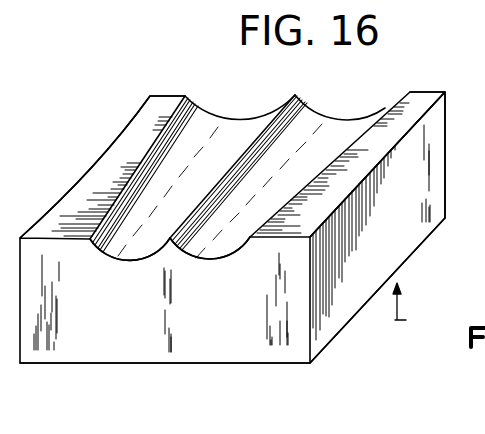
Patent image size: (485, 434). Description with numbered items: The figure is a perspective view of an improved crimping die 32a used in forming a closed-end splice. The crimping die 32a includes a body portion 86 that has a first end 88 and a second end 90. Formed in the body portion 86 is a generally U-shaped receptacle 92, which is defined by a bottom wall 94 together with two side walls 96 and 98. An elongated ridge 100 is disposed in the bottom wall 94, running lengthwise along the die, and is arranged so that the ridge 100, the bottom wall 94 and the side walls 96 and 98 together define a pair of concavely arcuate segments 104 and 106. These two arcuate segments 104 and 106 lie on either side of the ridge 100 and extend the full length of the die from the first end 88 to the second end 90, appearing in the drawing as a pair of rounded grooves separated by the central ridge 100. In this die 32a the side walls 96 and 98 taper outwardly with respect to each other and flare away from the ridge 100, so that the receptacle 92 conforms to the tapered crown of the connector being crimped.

The body portion 86 is at (102, 168).
The first end 88 is at (147, 352).
The second end 90 is at (424, 97).
The U-shaped receptacle 92 is at (218, 138).
The bottom wall 94 is at (195, 180).
The side wall 96 is at (167, 118).
The side wall 98 is at (362, 134).
The elongated ridge 100 is at (263, 142).
The concavely arcuate segment 104 is at (118, 262).
The concavely arcuate segment 106 is at (212, 259).
The crimping die 32a is at (424, 308).